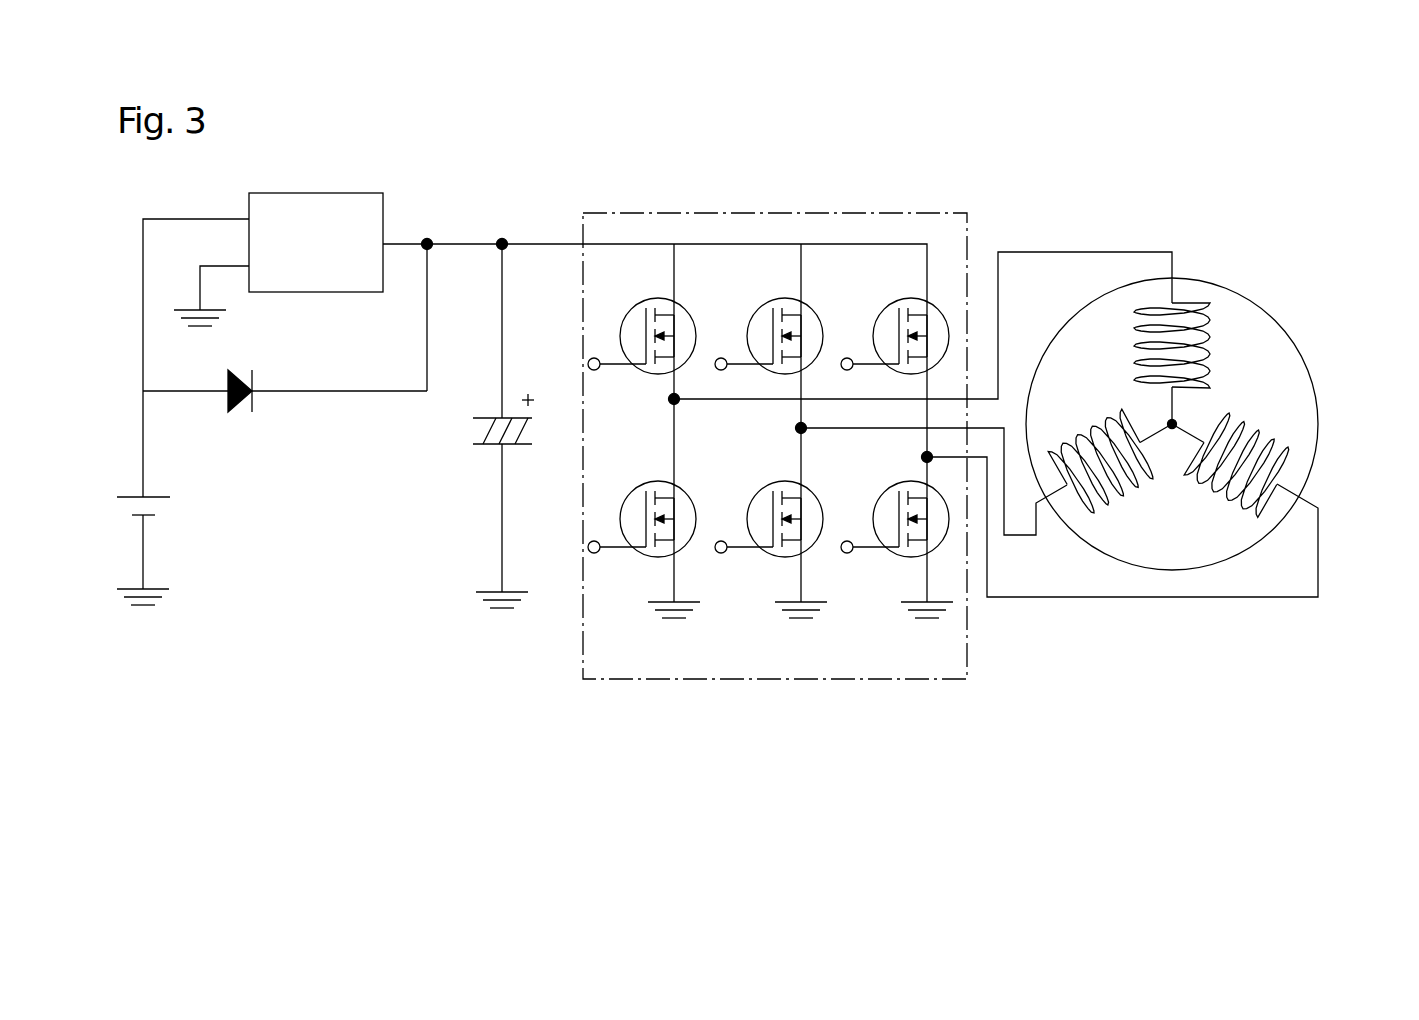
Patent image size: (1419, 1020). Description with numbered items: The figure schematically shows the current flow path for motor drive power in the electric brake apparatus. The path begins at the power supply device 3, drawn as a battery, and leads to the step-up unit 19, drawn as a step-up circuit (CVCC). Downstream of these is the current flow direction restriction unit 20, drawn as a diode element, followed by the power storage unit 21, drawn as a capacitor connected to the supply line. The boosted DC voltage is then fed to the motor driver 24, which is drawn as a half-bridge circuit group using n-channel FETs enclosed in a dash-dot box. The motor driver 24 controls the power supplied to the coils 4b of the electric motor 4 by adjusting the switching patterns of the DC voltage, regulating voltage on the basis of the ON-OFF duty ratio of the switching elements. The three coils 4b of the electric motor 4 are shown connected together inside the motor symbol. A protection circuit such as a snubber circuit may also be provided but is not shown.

The power supply device 3 is at (162, 500).
The step-up unit 19 is at (375, 210).
The current flow direction restriction unit 20 is at (235, 410).
The power storage unit 21 is at (487, 445).
The motor driver 24 is at (665, 670).
The electric motor 4 is at (1246, 576).
The coils 4b is at (1210, 337).